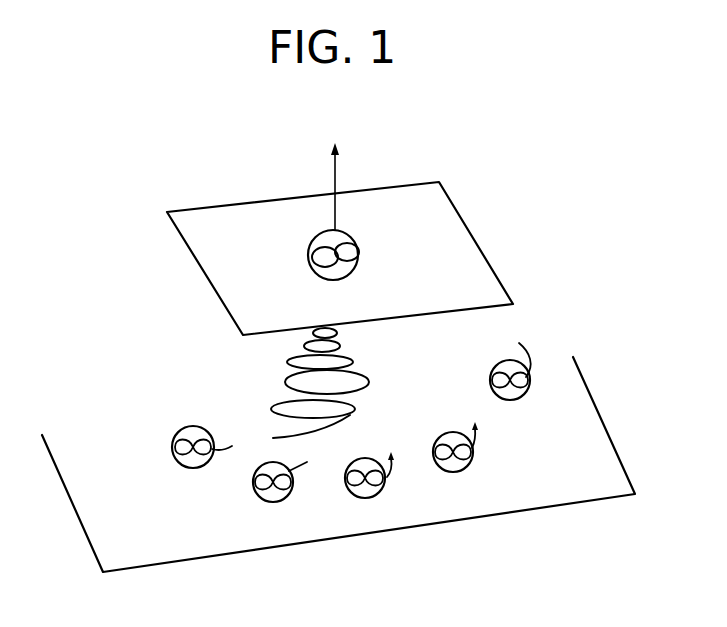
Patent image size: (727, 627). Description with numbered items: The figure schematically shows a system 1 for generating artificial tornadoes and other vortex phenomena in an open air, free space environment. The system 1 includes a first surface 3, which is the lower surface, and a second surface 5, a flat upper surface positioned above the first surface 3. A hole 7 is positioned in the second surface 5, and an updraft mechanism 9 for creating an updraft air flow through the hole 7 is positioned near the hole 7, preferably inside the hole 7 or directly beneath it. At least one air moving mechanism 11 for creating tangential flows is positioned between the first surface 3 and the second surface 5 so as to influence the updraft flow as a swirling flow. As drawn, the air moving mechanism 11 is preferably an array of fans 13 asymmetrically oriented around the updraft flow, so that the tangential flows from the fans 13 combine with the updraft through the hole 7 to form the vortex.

The system 1 is at (132, 208).
The first surface 3 is at (583, 370).
The second surface 5 is at (462, 210).
The hole 7 is at (313, 242).
The updraft mechanism 9 is at (345, 238).
The air moving mechanism 11 is at (240, 499).
The fans 13 is at (438, 466).